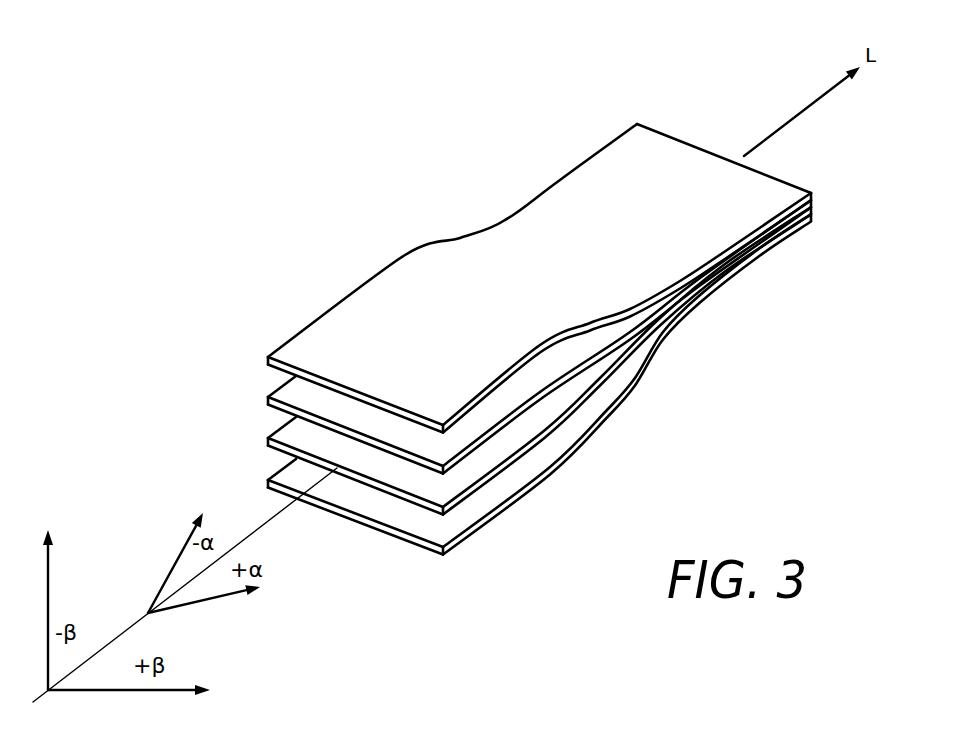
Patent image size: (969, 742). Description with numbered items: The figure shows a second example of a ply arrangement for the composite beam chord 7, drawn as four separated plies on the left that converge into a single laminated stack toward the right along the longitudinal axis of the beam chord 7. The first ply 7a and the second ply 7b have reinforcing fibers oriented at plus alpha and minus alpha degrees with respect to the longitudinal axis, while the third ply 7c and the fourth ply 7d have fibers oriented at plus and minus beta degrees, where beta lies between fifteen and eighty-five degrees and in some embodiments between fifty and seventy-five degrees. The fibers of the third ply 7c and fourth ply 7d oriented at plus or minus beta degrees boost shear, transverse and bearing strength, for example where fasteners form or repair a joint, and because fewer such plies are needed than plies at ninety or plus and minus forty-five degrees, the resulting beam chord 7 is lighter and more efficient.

The composite beam chord 7 is at (497, 79).
The first ply 7a is at (268, 481).
The second ply 7b is at (268, 439).
The third ply 7c is at (268, 398).
The fourth ply 7d is at (268, 358).